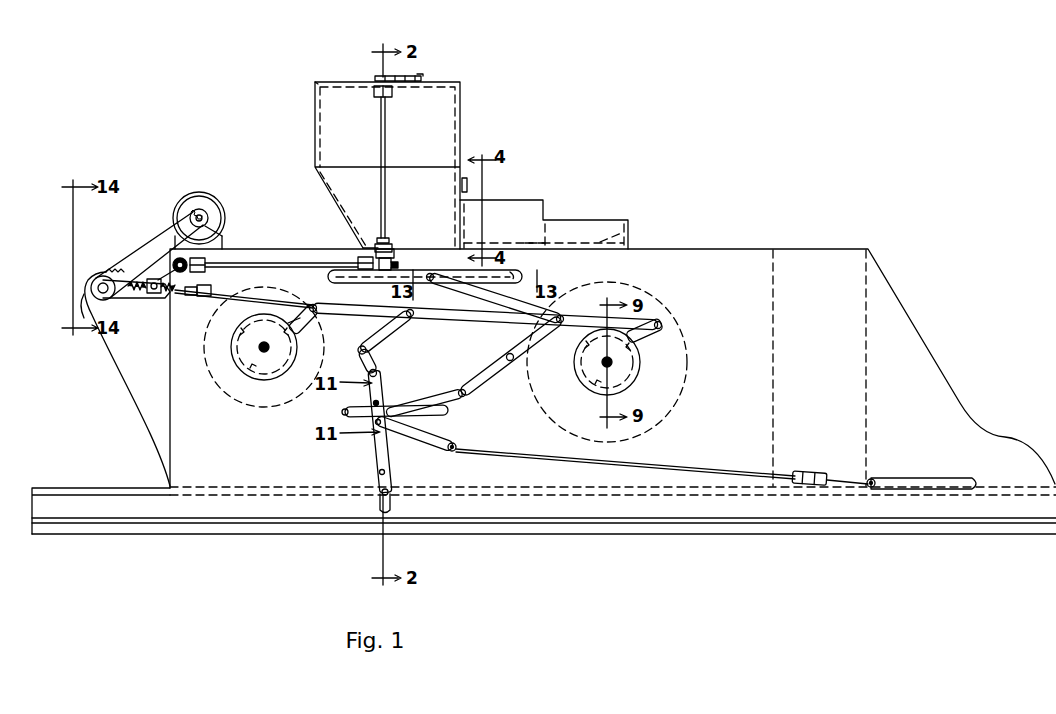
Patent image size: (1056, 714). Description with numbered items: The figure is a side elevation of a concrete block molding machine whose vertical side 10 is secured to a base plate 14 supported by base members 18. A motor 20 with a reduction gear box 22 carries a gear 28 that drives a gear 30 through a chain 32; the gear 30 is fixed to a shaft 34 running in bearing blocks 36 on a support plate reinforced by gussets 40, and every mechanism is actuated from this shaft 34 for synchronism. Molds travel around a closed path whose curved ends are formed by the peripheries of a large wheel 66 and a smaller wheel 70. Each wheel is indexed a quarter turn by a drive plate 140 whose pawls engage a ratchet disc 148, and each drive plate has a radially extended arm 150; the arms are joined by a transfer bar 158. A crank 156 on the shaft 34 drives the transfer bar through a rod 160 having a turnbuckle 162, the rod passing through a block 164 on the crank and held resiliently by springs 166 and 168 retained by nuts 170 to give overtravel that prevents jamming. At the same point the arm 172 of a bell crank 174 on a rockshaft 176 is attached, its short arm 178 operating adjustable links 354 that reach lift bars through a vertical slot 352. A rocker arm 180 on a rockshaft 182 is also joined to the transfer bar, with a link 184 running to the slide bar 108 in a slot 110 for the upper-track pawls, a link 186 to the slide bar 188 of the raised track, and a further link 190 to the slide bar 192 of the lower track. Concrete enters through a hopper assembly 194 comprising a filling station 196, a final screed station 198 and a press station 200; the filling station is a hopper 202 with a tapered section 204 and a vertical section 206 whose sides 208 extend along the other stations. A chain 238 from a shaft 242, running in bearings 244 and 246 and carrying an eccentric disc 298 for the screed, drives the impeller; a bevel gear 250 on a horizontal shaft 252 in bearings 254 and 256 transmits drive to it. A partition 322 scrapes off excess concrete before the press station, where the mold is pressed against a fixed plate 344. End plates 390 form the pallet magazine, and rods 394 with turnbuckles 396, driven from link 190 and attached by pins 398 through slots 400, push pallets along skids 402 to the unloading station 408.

The vertical side 10 is at (735, 249).
The base plate 14 is at (815, 524).
The base member 18 is at (740, 524).
The motor 20 is at (222, 205).
The reduction gear box 22 is at (208, 232).
The gear 28 is at (192, 212).
The gear 30 is at (100, 272).
The chain 32 is at (168, 222).
The shaft 34 is at (90, 286).
The bearing block 36 is at (92, 276).
The gusset 40 is at (112, 372).
The wheel 66 is at (688, 362).
The wheel 70 is at (222, 392).
The slide bar 108 is at (522, 275).
The slot 110 is at (380, 276).
The drive plate 140 is at (262, 366).
The ratchet disc 148 is at (240, 350).
The radially extended arm 150 is at (302, 330).
The crank 156 is at (130, 298).
The transfer bar 158 is at (462, 322).
The rod 160 is at (293, 300).
The turnbuckle 162 is at (212, 290).
The block 164 is at (155, 293).
The spring 166 is at (168, 292).
The spring 168 is at (137, 282).
The nut 170 is at (175, 290).
The arm 172 is at (395, 330).
The bell crank 174 is at (388, 368).
The rockshaft 176 is at (353, 340).
The short arm 178 is at (330, 355).
The rocker arm 180 is at (492, 372).
The rockshaft 182 is at (505, 353).
The link 184 is at (465, 290).
The link 186 is at (452, 392).
The slide bar 188 is at (405, 414).
The link 190 is at (400, 432).
The slide bar 192 is at (460, 440).
The hopper assembly 194 is at (462, 135).
The filling station 196 is at (362, 236).
The final screed station 198 is at (490, 214).
The press station 200 is at (600, 230).
The hopper 202 is at (314, 126).
The tapered section 204 is at (332, 202).
The vertical section 206 is at (318, 92).
The side 208 is at (548, 208).
The chain 238 is at (405, 75).
The shaft 242 is at (388, 143).
The bearing 244 is at (390, 95).
The bearing 246 is at (392, 246).
The bevel gear 250 is at (398, 266).
The horizontal shaft 252 is at (300, 266).
The bearing 254 is at (358, 262).
The bearing 256 is at (205, 262).
The eccentric disc 298 is at (386, 240).
The partition 322 is at (516, 237).
The fixed plate 344 is at (628, 231).
The vertical slot 352 is at (378, 502).
The adjustable link 354 is at (370, 452).
The end plate 390 is at (864, 370).
The rod 394 is at (700, 468).
The turnbuckle 396 is at (806, 470).
The pin 398 is at (876, 478).
The slot 400 is at (930, 478).
The skid 402 is at (528, 484).
The unloading station 408 is at (55, 486).